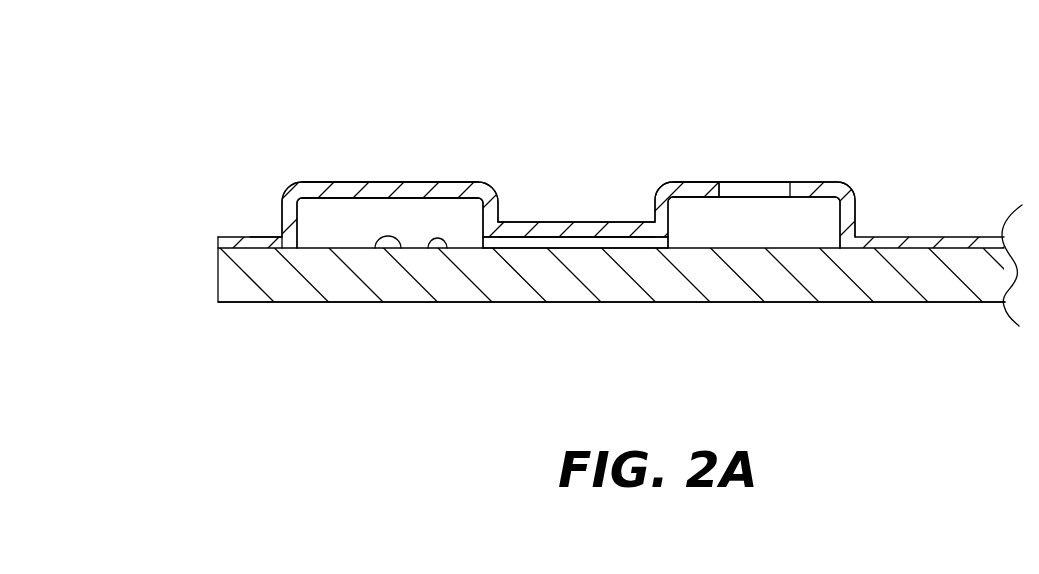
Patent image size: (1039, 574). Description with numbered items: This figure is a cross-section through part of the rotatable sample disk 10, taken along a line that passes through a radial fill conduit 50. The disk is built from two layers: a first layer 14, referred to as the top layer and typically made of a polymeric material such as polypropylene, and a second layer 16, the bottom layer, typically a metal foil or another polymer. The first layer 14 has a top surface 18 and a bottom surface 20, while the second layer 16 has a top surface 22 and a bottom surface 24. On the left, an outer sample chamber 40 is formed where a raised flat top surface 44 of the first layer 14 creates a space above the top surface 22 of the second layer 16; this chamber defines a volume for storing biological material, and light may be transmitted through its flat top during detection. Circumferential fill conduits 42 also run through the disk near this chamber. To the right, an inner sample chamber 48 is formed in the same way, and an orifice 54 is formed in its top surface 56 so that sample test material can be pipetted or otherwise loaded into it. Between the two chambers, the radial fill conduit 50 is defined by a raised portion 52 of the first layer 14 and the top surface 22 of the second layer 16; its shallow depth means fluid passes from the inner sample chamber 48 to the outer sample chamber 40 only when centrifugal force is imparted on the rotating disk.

The sample disk 10 is at (170, 127).
The first layer 14 is at (237, 237).
The second layer 16 is at (283, 283).
The top surface 18 is at (262, 237).
The bottom surface 20 is at (250, 253).
The top surface 22 is at (437, 250).
The bottom surface 24 is at (517, 303).
The outer sample chamber 40 is at (408, 188).
The circumferential fill conduit 42 is at (387, 250).
The raised flat top surface 44 is at (357, 190).
The inner sample chamber 48 is at (827, 183).
The radial fill conduit 50 is at (570, 241).
The raised portion 52 is at (537, 228).
The orifice 54 is at (748, 188).
The top surface 56 is at (708, 182).